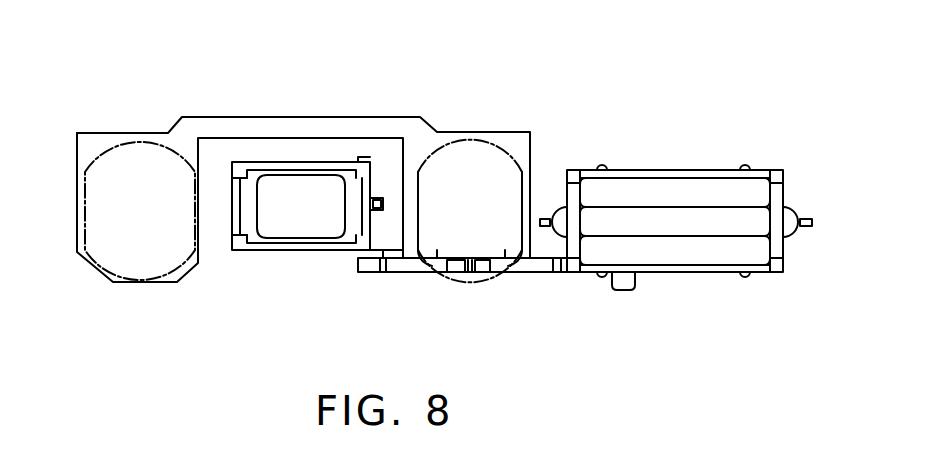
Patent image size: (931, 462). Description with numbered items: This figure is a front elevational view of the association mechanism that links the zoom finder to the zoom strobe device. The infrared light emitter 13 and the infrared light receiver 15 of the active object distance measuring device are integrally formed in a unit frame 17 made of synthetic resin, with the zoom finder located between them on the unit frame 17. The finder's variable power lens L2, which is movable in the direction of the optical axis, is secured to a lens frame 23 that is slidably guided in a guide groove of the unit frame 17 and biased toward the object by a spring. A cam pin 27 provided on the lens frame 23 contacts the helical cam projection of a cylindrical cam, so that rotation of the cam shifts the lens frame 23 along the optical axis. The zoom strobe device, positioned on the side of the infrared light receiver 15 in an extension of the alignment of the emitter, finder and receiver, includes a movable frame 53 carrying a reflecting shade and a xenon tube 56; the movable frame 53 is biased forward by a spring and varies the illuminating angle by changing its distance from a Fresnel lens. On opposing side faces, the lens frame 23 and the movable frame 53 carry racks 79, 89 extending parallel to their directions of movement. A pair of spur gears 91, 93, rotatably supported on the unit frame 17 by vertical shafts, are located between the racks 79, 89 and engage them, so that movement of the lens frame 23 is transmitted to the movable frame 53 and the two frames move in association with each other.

The unit frame 17 is at (218, 127).
The infrared light emitter 13 is at (152, 252).
The lens frame 23 is at (333, 160).
The variable power lens L2 is at (283, 235).
The cam pin 27 is at (382, 199).
The infrared light receiver 15 is at (510, 160).
The spur gear 91 is at (408, 275).
The rack 79 is at (366, 273).
The spur gear 93 is at (515, 273).
The rack 89 is at (557, 273).
The movable frame 53 is at (630, 170).
The xenon tube 56 is at (795, 205).